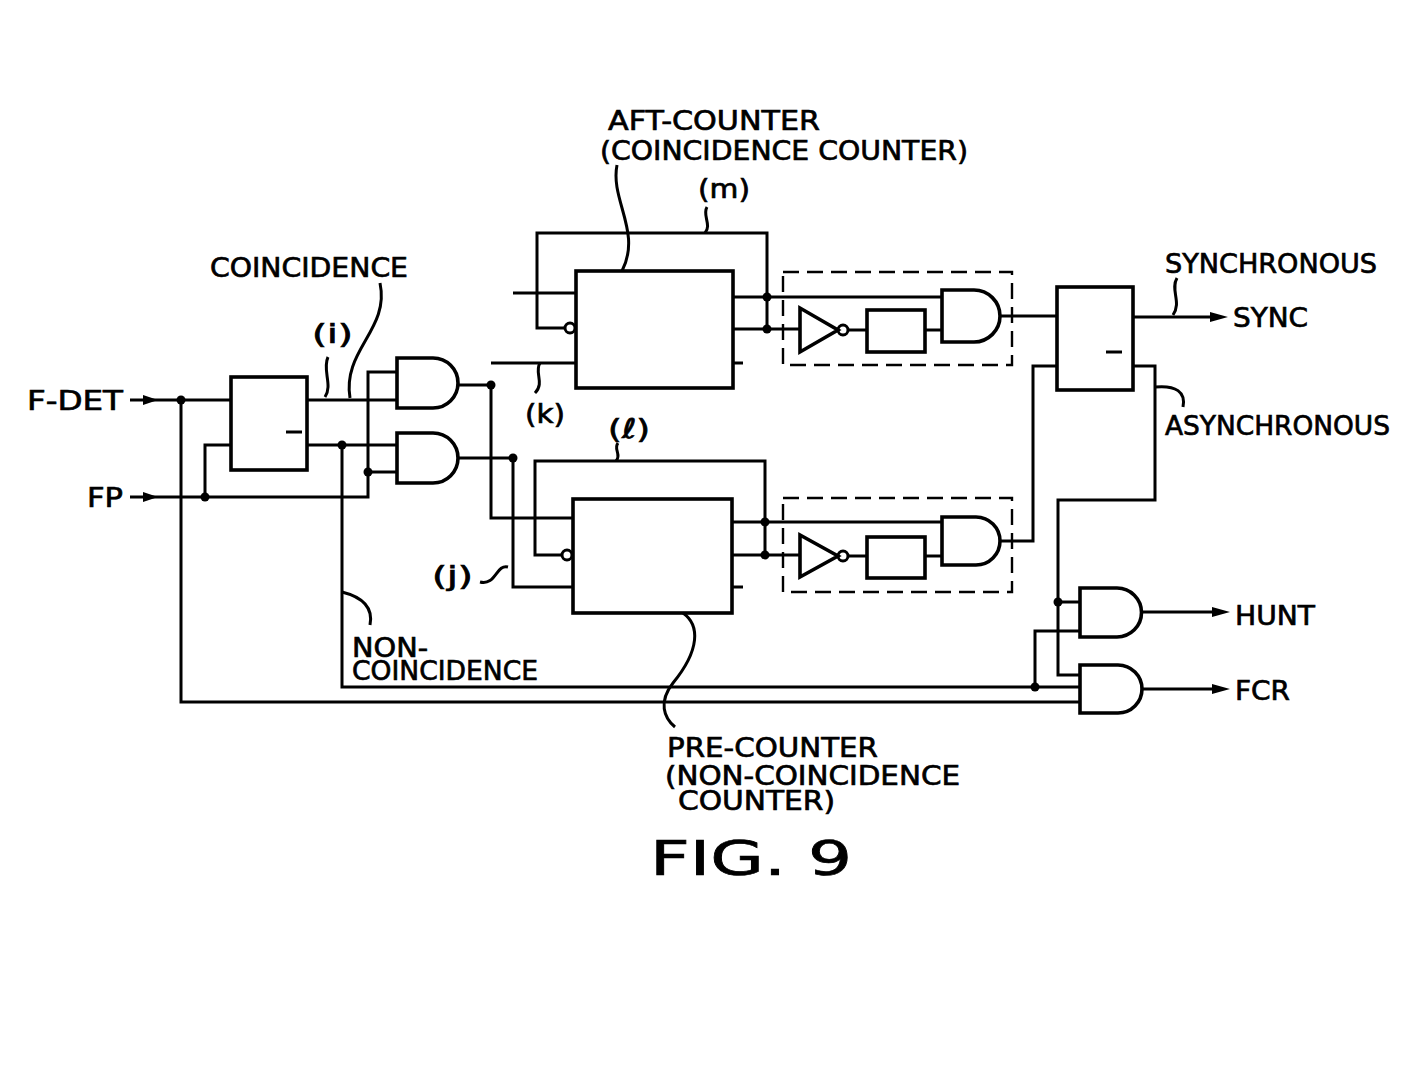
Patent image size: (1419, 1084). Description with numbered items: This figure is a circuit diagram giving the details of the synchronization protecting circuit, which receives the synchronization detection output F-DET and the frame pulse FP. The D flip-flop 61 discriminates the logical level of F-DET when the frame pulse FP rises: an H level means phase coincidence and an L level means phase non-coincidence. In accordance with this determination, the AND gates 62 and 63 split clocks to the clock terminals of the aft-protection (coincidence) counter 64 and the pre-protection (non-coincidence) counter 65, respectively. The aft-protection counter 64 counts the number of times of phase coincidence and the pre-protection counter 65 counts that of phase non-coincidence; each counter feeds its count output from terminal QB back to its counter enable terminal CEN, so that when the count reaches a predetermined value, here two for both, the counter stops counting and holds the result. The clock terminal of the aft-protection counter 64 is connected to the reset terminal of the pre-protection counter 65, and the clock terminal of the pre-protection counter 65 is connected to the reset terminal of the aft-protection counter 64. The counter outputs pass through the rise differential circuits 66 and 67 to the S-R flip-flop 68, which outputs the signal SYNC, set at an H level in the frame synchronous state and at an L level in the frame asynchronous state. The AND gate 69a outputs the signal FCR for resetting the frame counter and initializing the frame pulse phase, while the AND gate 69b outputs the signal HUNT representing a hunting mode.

The D flip-flop 61 is at (250, 375).
The AND gate 62 is at (430, 358).
The AND gate 63 is at (418, 485).
The aft-protection (coincidence) counter 64 is at (677, 388).
The pre-protection (non-coincidence) counter 65 is at (572, 607).
The rise differential circuit 66 is at (915, 270).
The rise differential circuit 67 is at (927, 495).
The S-R flip-flop 68 is at (1093, 287).
The AND gate 69a is at (1118, 717).
The AND gate 69b is at (1133, 588).